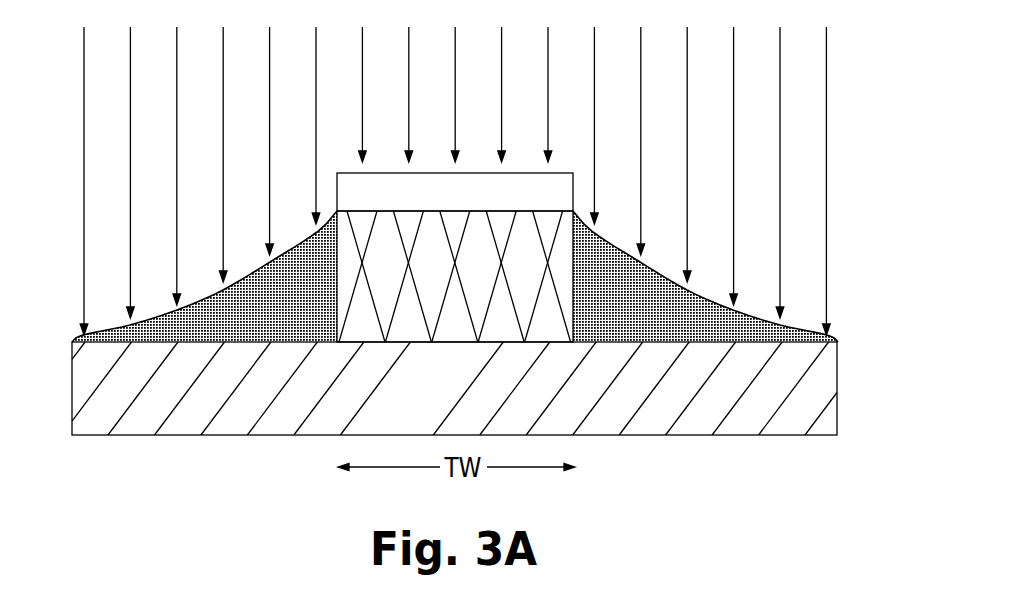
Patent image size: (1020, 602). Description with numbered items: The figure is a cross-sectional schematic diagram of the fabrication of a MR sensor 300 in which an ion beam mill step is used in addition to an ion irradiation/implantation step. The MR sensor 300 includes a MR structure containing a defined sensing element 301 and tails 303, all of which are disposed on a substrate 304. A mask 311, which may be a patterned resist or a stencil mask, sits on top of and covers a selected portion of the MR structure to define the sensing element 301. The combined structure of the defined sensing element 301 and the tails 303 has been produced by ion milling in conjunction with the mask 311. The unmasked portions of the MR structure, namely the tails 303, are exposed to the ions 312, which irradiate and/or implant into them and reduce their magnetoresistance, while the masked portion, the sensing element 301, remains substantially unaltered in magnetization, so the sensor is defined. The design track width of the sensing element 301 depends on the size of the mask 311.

The MR sensor 300 is at (457, 340).
The defined sensing element 301 is at (455, 276).
The tails 303 is at (318, 313).
The substrate 304 is at (454, 388).
The mask 311 is at (455, 192).
The ions 312 is at (84, 181).